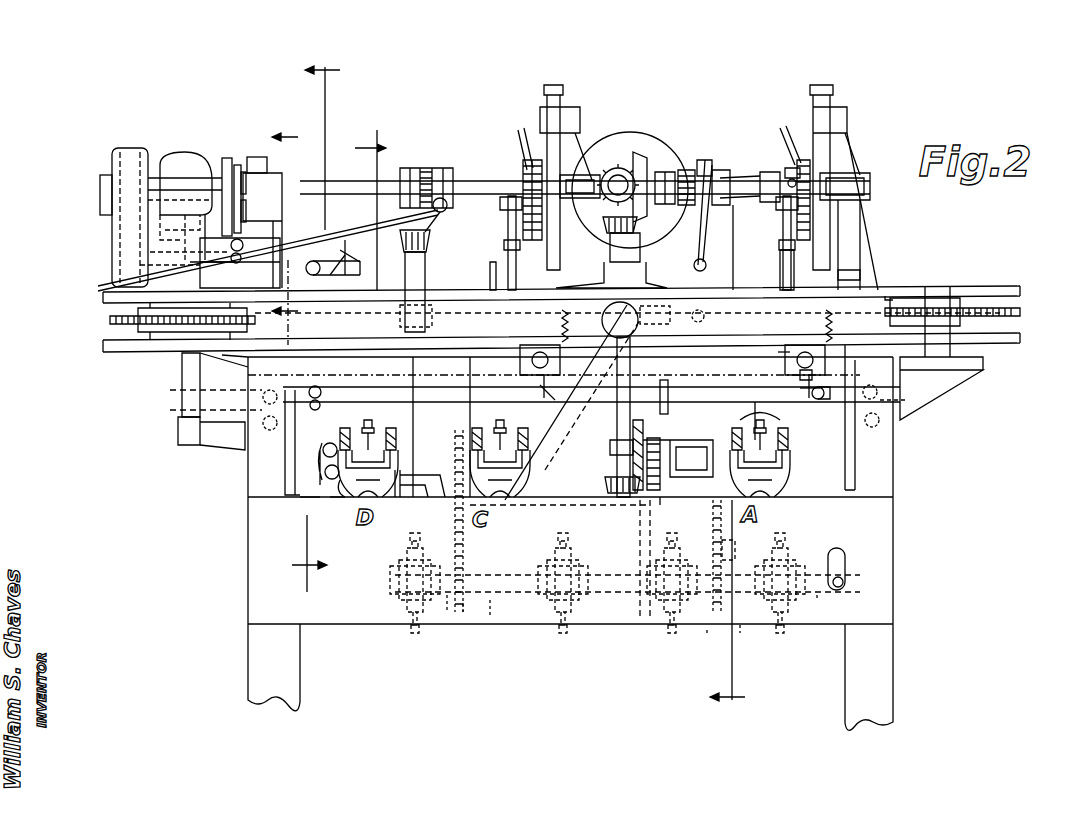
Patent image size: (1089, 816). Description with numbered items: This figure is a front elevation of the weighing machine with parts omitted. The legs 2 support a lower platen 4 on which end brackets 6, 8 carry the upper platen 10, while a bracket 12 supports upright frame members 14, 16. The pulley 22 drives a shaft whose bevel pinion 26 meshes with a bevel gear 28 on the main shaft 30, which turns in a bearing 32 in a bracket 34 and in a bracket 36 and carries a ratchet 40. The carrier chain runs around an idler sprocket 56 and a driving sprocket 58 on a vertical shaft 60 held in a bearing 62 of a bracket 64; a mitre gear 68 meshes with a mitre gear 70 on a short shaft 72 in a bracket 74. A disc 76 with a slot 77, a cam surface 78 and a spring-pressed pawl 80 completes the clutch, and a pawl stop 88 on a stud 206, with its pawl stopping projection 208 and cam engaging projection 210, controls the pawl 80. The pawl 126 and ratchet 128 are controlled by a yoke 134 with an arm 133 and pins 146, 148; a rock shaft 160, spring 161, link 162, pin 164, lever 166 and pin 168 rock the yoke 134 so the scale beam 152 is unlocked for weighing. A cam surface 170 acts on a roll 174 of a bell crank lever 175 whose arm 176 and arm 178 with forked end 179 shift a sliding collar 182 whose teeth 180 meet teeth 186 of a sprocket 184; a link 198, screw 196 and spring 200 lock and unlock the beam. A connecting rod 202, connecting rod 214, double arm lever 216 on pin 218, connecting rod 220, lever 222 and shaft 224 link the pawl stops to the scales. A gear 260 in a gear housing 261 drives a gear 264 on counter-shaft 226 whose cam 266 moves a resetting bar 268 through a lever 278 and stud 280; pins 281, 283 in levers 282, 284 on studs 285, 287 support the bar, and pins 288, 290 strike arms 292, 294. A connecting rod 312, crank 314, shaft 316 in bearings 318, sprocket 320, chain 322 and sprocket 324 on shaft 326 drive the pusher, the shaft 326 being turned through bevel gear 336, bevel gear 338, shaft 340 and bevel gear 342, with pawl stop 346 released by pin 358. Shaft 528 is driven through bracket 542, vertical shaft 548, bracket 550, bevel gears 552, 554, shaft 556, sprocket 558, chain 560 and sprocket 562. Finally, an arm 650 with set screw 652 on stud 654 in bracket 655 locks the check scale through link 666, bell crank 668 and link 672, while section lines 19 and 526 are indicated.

The legs 2 is at (893, 666).
The lower platen 4 is at (893, 543).
The end bracket 6 is at (895, 480).
The end bracket 8 is at (248, 478).
The upper platen 10 is at (1022, 357).
The bracket 12 is at (640, 548).
The upright frame member 14 is at (630, 352).
The upright frame member 16 is at (284, 229).
The section line 19 is at (525, 386).
The pulley 22 is at (640, 150).
The bevel pinion 26 is at (610, 168).
The bevel gear 28 is at (663, 172).
The main shaft 30 is at (733, 205).
The bearing 32 is at (262, 157).
The bracket 34 is at (282, 205).
The bracket 36 is at (875, 232).
The ratchet 40 is at (244, 172).
The idler sprocket 56 is at (1020, 312).
The driving sprocket 58 is at (110, 320).
The vertical shaft 60 is at (182, 390).
The bearing 62 is at (178, 432).
The bracket 64 is at (210, 455).
The mitre gear 68 is at (185, 175).
The mitre gear 70 is at (190, 160).
The short shaft 72 is at (185, 165).
The bracket 74 is at (200, 165).
The disc 76 is at (238, 165).
The slot 77 is at (212, 160).
The cam surface 78 is at (226, 158).
The spring-pressed pawl 80 is at (244, 200).
The pawl stop 88 is at (190, 268).
The pawl 126 is at (870, 198).
The ratchet 128 is at (818, 100).
The arm 133 is at (790, 168).
The yoke 134 is at (803, 160).
The hardened pin 146 is at (783, 128).
The hardened pin 148 is at (779, 225).
The scale beam 152 is at (790, 447).
The rock shaft 160 is at (826, 338).
The spring 161 is at (602, 318).
The link 162 is at (840, 272).
The pin 164 is at (788, 180).
The lever 166 is at (800, 376).
The pin 168 is at (778, 355).
The cam surface 170 is at (840, 222).
The roll 174 is at (838, 252).
The bell crank lever 175 is at (704, 312).
The arm 176 is at (700, 338).
The arm 178 is at (783, 200).
The forked end 179 is at (765, 202).
The teeth 180 is at (722, 185).
The sliding collar 182 is at (727, 200).
The sprocket 184 is at (688, 170).
The teeth 186 is at (712, 160).
The screw 196 is at (772, 424).
The link 198 is at (757, 404).
The spring 200 is at (888, 297).
The connecting rod 202 is at (340, 248).
The stud 206 is at (230, 270).
The pawl stopping projection 208 is at (140, 318).
The cam engaging projection 210 is at (190, 262).
The connecting rod 214 is at (345, 255).
The double arm lever 216 is at (460, 335).
The pin 218 is at (415, 292).
The connecting rod 220 is at (475, 290).
The lever 222 is at (645, 320).
The shaft 224 is at (694, 268).
The counter-shaft 226 is at (150, 252).
The gear 260 is at (112, 160).
The gear housing 261 is at (112, 150).
The gear 264 is at (140, 265).
The cam 266 is at (345, 240).
The resetting bar 268 is at (890, 318).
The lever 278 is at (313, 385).
The stud 280 is at (315, 397).
The pin 281 is at (200, 380).
The lever 282 is at (200, 411).
The pin 283 is at (880, 389).
The lever 284 is at (900, 400).
The stud 285 is at (262, 440).
The stud 287 is at (880, 420).
The pin 288 is at (533, 410).
The pin 290 is at (826, 398).
The arm 292 is at (540, 372).
The arm 294 is at (802, 392).
The connecting rod 312 is at (845, 580).
The crank 314 is at (817, 600).
The shaft 316 is at (740, 630).
The bearings 318 is at (796, 570).
The sprocket 320 is at (707, 633).
The chain 322 is at (728, 548).
The sprocket 324 is at (712, 438).
The shaft 326 is at (663, 500).
The bevel gear 336 is at (633, 448).
The bevel gear 338 is at (612, 480).
The shaft 340 is at (625, 435).
The bevel gear 342 is at (780, 255).
The pawl stop 346 is at (662, 505).
The adjustable pin 358 is at (670, 398).
The pipe 526 is at (490, 615).
The shaft 528 is at (447, 595).
The bracket 542 is at (410, 267).
The vertical shaft 548 is at (412, 425).
The bracket 550 is at (430, 500).
The bevel gear 552 is at (400, 517).
The bevel gear 554 is at (405, 525).
The shaft 556 is at (459, 545).
The sprocket 558 is at (490, 440).
The chain 560 is at (505, 512).
The sprocket 562 is at (463, 603).
The arm 650 is at (342, 443).
The set screw 652 is at (356, 424).
The stud 654 is at (327, 447).
The bracket 655 is at (307, 497).
The link 666 is at (591, 400).
The bell crank 668 is at (415, 285).
The link 672 is at (410, 162).